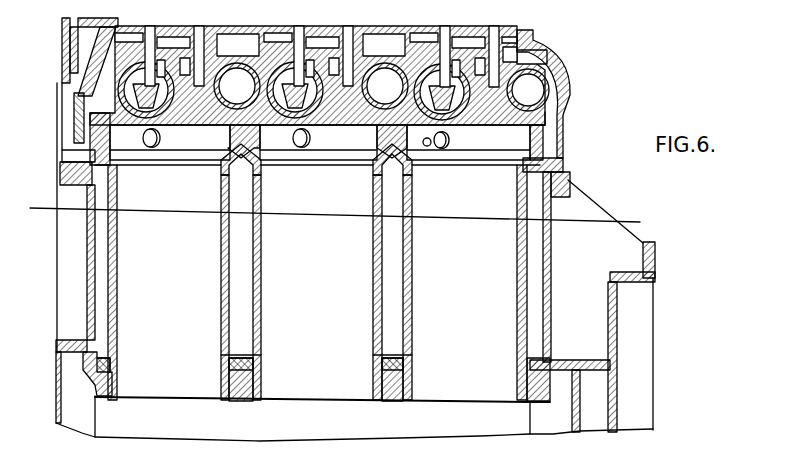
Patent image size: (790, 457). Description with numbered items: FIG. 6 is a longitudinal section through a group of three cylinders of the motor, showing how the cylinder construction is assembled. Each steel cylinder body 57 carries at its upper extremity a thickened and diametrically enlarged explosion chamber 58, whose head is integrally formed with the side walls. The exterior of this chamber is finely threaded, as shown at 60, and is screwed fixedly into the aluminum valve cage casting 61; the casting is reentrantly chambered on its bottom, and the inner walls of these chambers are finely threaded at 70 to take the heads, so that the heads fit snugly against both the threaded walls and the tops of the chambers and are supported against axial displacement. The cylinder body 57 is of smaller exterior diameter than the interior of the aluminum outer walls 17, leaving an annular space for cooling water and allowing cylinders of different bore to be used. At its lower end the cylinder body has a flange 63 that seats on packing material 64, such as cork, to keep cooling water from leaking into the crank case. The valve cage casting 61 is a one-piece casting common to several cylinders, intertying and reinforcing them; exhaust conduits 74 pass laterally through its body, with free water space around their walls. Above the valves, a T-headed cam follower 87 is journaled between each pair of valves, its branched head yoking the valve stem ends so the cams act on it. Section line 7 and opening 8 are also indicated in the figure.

The section line 7- 7 is at (337, 211).
The water passage opening 8 is at (228, 137).
The aluminum outer walls 17 is at (550, 236).
The steel cylinder body 57 is at (110, 258).
The explosion chamber 58 is at (546, 128).
The fine exterior threading 60 is at (540, 146).
The aluminum valve cage casting 61 is at (568, 68).
The flange 63 is at (390, 358).
The packing material 64 is at (242, 360).
The threaded inner walls of chambers 70 is at (545, 112).
The exhaust conduit 74 is at (537, 80).
The T-headed cam follower 87 is at (496, 27).